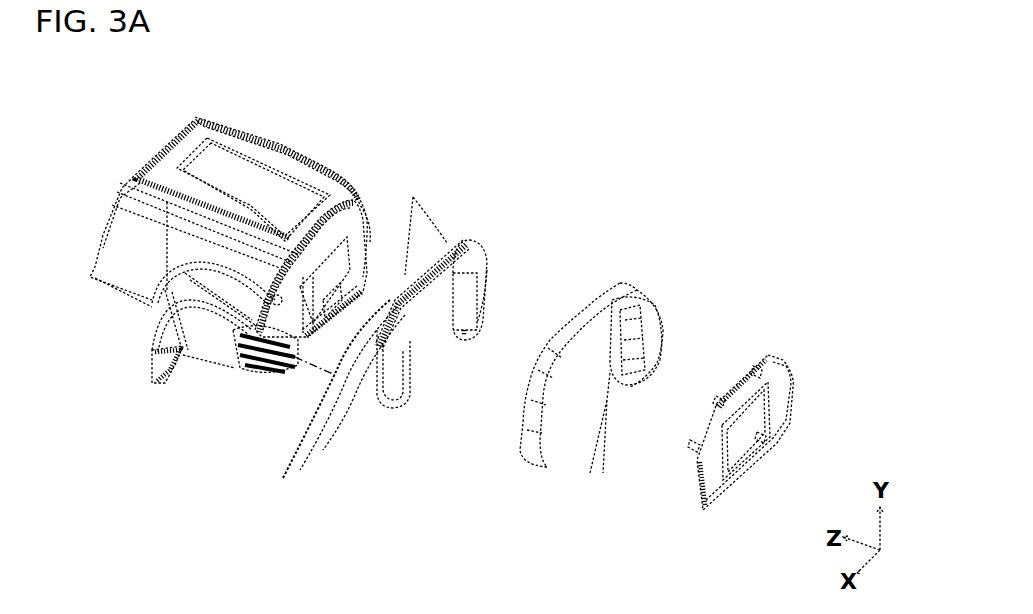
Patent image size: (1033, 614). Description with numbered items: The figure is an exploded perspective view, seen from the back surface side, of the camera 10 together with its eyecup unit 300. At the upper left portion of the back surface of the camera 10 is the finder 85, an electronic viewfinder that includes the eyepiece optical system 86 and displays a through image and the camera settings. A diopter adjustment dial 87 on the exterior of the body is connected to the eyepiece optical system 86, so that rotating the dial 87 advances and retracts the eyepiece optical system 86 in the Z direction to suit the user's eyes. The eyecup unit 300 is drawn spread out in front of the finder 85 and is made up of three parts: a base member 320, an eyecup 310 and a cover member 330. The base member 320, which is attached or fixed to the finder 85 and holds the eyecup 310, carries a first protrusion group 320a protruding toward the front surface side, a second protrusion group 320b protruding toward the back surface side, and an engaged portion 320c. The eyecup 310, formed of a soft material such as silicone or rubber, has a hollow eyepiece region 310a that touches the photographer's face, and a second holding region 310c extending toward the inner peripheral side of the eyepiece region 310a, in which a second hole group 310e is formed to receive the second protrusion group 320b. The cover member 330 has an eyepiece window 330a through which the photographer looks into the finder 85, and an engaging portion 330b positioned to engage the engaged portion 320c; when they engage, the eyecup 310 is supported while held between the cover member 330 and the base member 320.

The camera 10 is at (147, 88).
The eyepiece optical system 86 is at (275, 150).
The finder 85 is at (325, 190).
The diopter adjustment dial 87 is at (240, 360).
The eyecup unit 300 is at (837, 167).
The base member 320 is at (400, 333).
The first protrusion group 320a is at (440, 245).
The second protrusion group 320b is at (487, 290).
The engaged portion 320c is at (410, 340).
The eyecup 310 is at (632, 382).
The eyepiece region 310a is at (543, 440).
The second holding region 310c is at (607, 400).
The second hole group 310e is at (660, 340).
The cover member 330 is at (741, 431).
The eyepiece window 330a is at (770, 430).
The engaging portion 330b is at (690, 445).